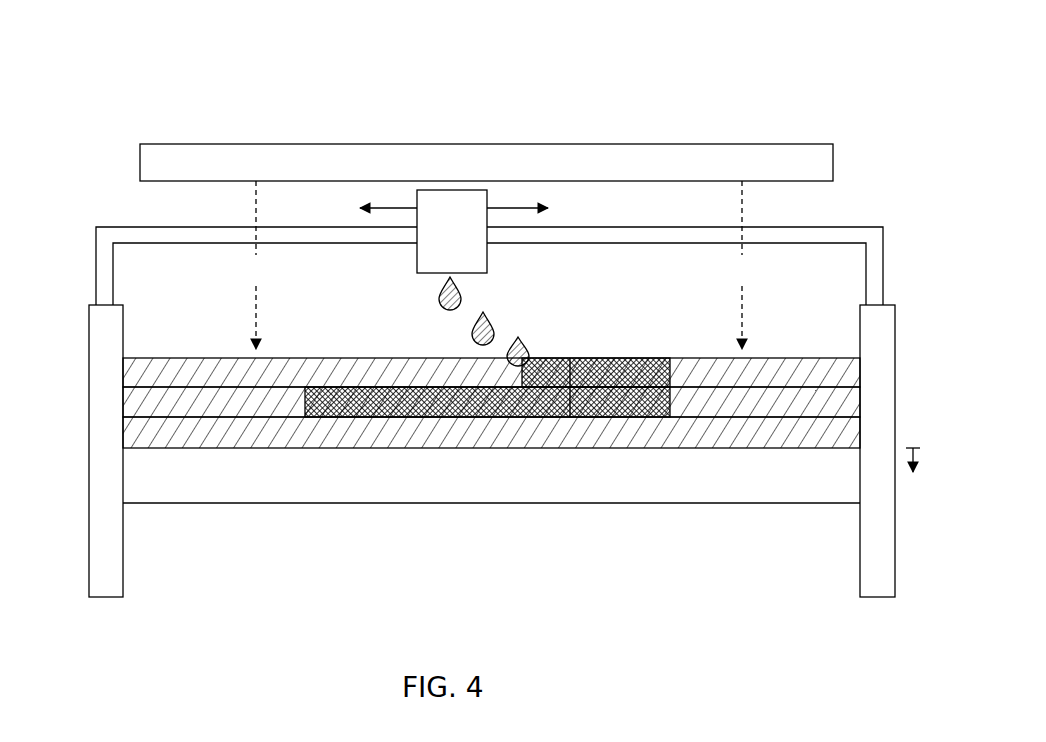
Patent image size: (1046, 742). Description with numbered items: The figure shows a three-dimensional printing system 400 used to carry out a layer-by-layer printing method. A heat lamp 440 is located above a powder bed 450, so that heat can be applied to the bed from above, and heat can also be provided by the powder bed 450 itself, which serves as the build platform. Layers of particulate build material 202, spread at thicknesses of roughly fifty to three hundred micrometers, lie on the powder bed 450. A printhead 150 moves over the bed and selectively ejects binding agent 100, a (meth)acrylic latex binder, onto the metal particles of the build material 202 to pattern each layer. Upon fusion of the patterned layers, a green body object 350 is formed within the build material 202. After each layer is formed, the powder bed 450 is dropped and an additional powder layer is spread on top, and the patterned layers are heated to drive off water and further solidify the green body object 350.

The three-dimensional printing system 400 is at (166, 96).
The heat lamp 440 is at (468, 173).
The printhead 150 is at (433, 240).
The binding agent 100 is at (440, 298).
The particulate build material 202 is at (196, 398).
The green body object 350 is at (448, 395).
The powder bed 450 is at (676, 462).